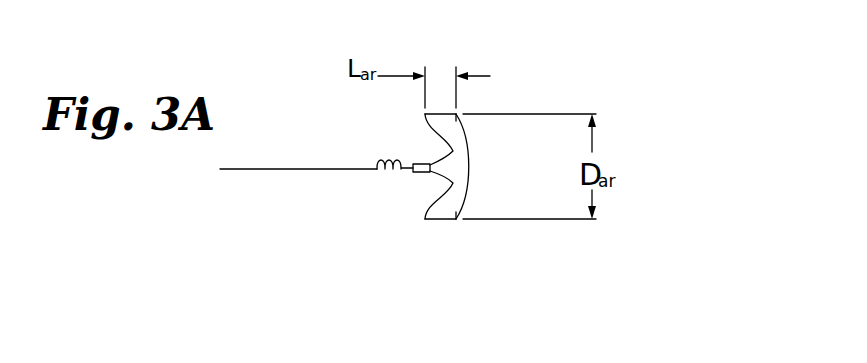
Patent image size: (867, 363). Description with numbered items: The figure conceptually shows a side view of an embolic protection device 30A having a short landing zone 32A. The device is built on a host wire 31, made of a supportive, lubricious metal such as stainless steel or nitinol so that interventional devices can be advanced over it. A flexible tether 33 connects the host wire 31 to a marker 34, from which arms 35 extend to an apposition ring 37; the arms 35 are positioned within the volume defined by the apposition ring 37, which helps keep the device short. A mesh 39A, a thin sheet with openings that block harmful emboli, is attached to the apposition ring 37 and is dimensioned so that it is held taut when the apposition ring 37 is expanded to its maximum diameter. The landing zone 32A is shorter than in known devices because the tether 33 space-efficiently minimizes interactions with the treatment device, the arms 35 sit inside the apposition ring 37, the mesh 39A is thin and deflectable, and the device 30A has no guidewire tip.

The embolic protection device 30A is at (565, 82).
The host wire 31 is at (259, 170).
The landing zone 32A is at (457, 287).
The tether 33 is at (384, 171).
The marker 34 is at (421, 164).
The arms 35 is at (428, 206).
The apposition ring 37 is at (441, 221).
The mesh 39A is at (469, 179).